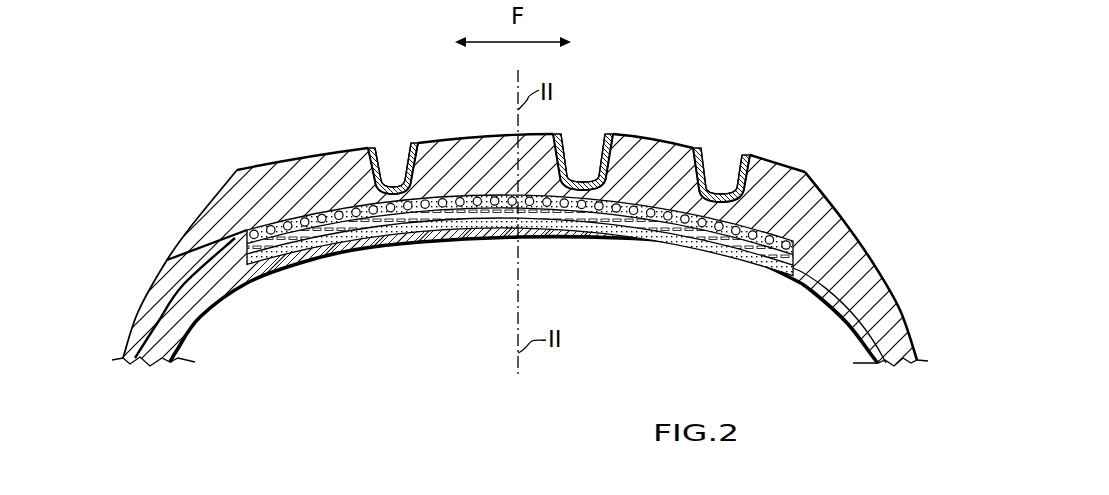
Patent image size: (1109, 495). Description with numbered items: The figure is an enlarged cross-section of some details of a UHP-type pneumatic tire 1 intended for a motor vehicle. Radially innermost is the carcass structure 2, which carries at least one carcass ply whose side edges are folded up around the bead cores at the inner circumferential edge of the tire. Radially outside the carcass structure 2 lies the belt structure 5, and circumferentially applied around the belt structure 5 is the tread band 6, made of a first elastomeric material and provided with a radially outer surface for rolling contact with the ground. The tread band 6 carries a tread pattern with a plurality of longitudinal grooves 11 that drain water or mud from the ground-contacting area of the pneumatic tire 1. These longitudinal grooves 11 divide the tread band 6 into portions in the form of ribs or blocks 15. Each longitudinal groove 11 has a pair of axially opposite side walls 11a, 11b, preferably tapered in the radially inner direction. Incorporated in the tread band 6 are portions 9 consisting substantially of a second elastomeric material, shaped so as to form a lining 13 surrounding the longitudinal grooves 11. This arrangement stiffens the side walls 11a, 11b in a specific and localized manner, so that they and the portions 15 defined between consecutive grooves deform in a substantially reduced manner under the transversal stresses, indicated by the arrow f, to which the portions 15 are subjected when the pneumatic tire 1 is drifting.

The pneumatic tire 1 is at (754, 107).
The carcass structure 2 is at (841, 290).
The belt structure 5 is at (877, 262).
The tread band 6 is at (829, 200).
The portion of second elastomeric material 9 is at (410, 247).
The longitudinal groove 11 is at (395, 157).
The side wall of longitudinal groove 11a is at (414, 138).
The side wall of longitudinal groove 11b is at (383, 145).
The lining 13 is at (363, 247).
The rib or block portion of tread band 15 is at (285, 160).